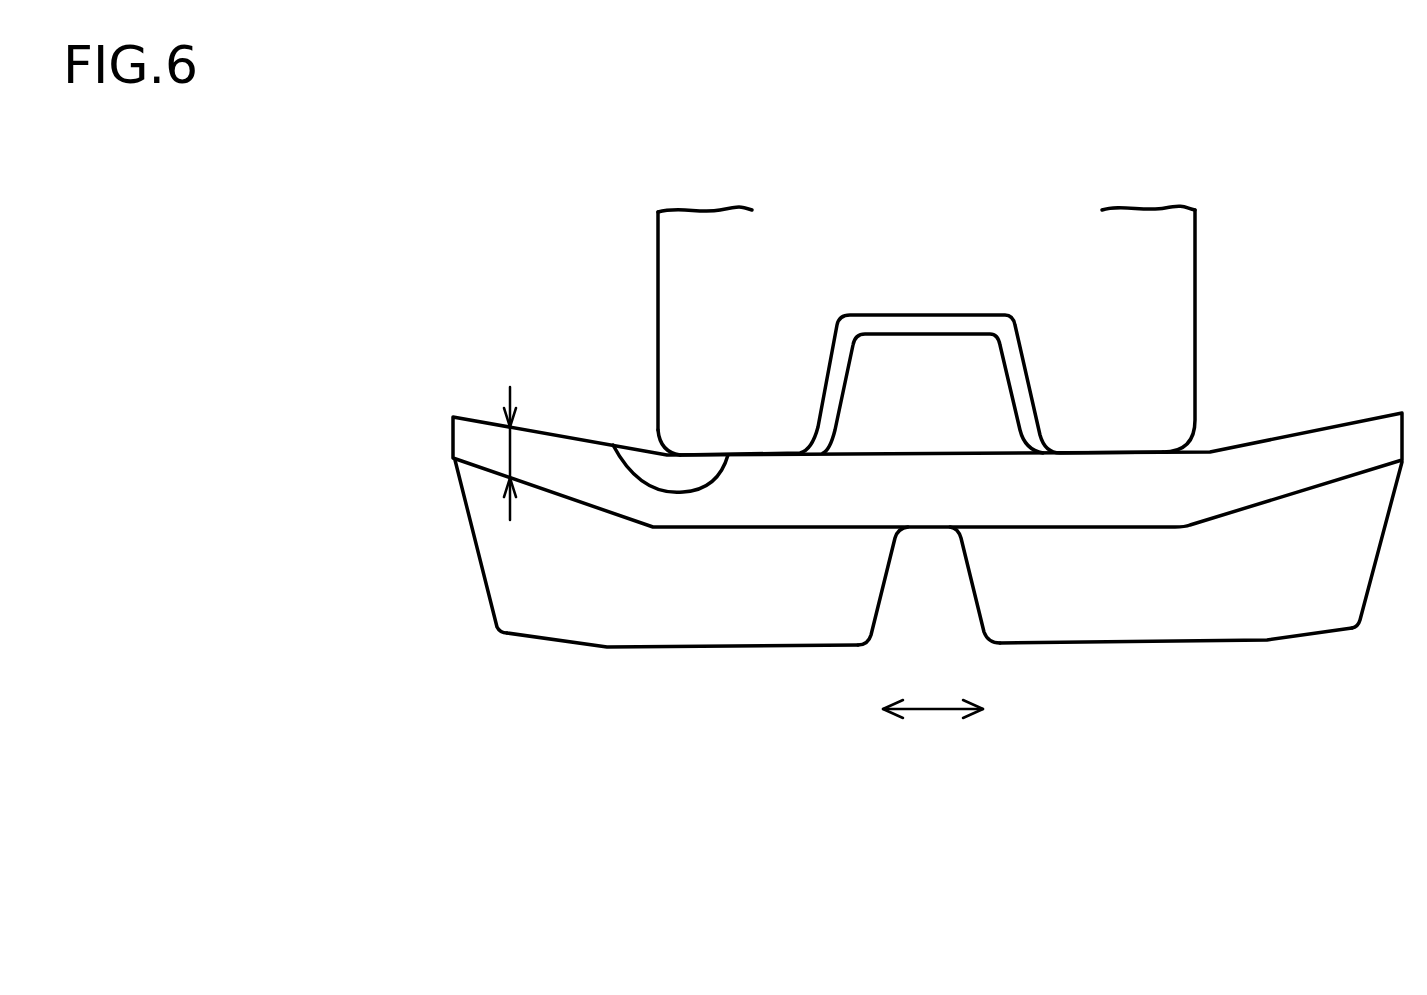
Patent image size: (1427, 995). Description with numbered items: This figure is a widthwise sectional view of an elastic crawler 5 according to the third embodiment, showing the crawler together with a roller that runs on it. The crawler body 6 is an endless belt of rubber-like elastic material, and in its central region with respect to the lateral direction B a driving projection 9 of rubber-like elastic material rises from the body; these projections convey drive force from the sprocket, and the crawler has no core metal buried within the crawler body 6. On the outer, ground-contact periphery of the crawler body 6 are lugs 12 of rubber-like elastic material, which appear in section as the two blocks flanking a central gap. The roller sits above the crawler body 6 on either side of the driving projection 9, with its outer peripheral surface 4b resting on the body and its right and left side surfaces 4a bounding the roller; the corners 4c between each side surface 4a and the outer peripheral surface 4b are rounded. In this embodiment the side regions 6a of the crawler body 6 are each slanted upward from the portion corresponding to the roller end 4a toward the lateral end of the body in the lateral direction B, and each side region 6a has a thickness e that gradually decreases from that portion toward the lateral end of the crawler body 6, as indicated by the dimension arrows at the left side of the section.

The side surface 4a is at (658, 317).
The outer peripheral surface 4b is at (613, 445).
The corner 4c is at (676, 442).
The elastic crawler 5 is at (1218, 397).
The crawler body 6 is at (1098, 528).
The side region 6a is at (631, 530).
The driving projection 9 is at (976, 334).
The lug 12 is at (762, 647).
The thickness e is at (508, 428).
The lateral direction B is at (928, 711).